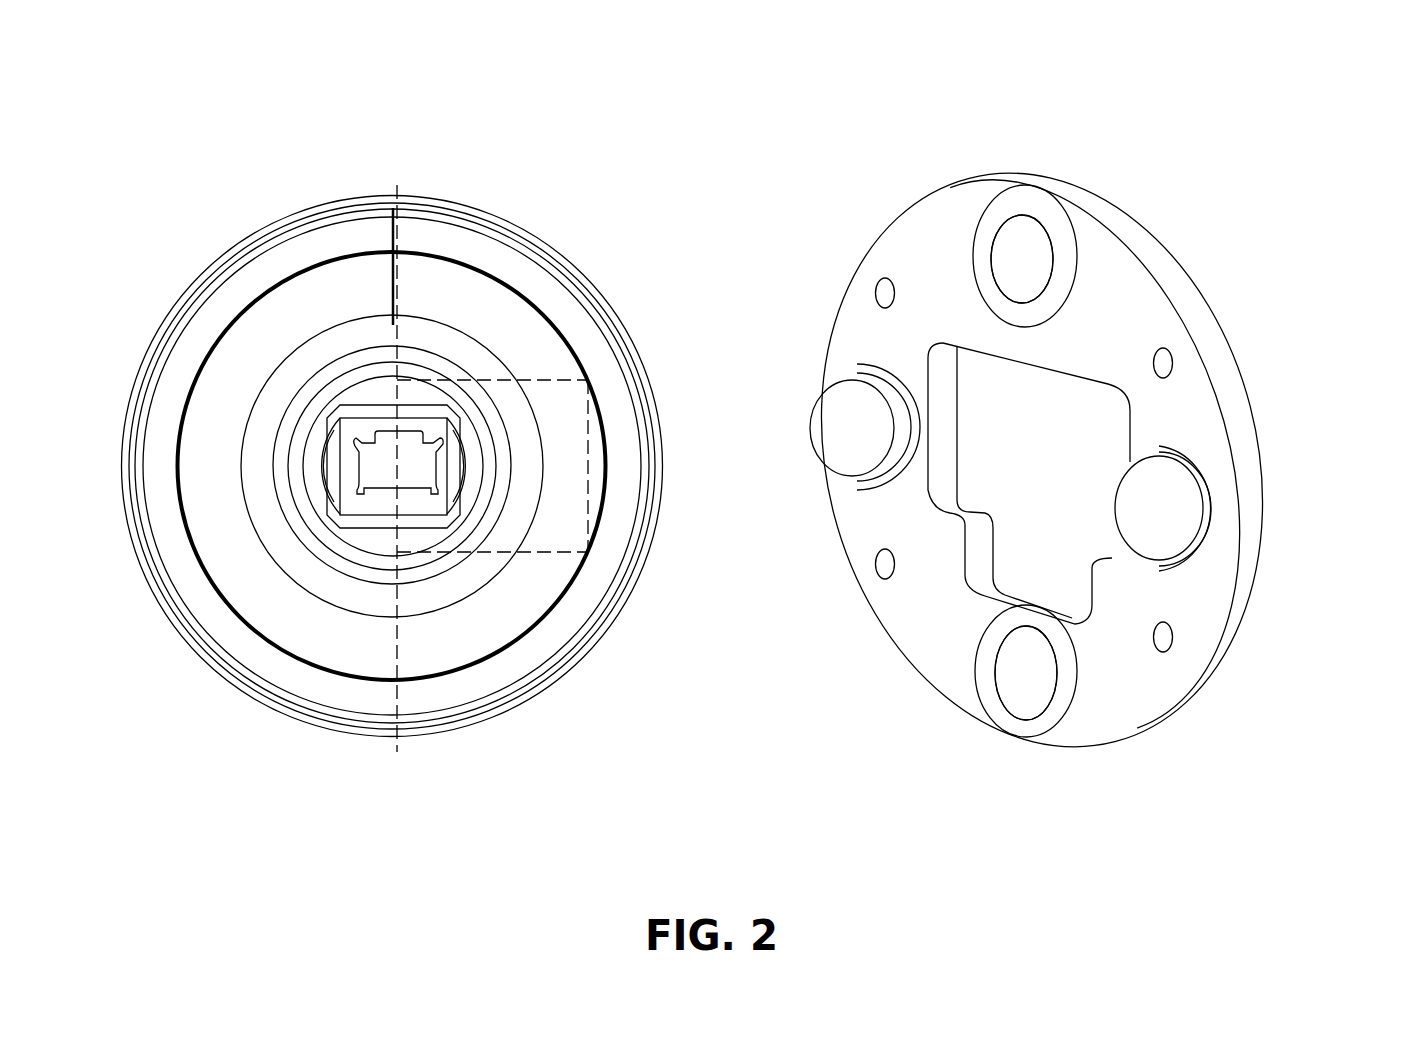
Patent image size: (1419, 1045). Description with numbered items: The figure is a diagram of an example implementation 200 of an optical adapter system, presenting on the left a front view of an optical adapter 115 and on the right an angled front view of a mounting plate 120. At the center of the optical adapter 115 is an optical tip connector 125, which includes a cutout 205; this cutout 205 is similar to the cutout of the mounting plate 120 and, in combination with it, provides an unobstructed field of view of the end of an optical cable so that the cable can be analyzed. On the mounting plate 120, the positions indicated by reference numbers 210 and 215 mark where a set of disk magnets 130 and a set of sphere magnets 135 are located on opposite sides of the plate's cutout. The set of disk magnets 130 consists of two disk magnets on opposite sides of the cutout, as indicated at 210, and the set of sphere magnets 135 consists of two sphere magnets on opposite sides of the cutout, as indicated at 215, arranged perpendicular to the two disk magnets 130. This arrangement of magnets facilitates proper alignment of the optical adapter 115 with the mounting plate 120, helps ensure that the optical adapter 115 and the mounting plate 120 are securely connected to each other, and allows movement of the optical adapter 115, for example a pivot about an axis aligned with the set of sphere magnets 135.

The example implementation 200 is at (185, 46).
The optical adapter 115 is at (392, 492).
The mounting plate 120 is at (1050, 465).
The optical tip connector 125 is at (300, 402).
The cutout 205 is at (375, 474).
The set of disk magnets 130 is at (1018, 678).
The reference number indicating location of disk magnets 210 is at (991, 647).
The reference number indicating location of sphere magnets 215 is at (882, 404).
The set of sphere magnets 135 is at (1165, 523).